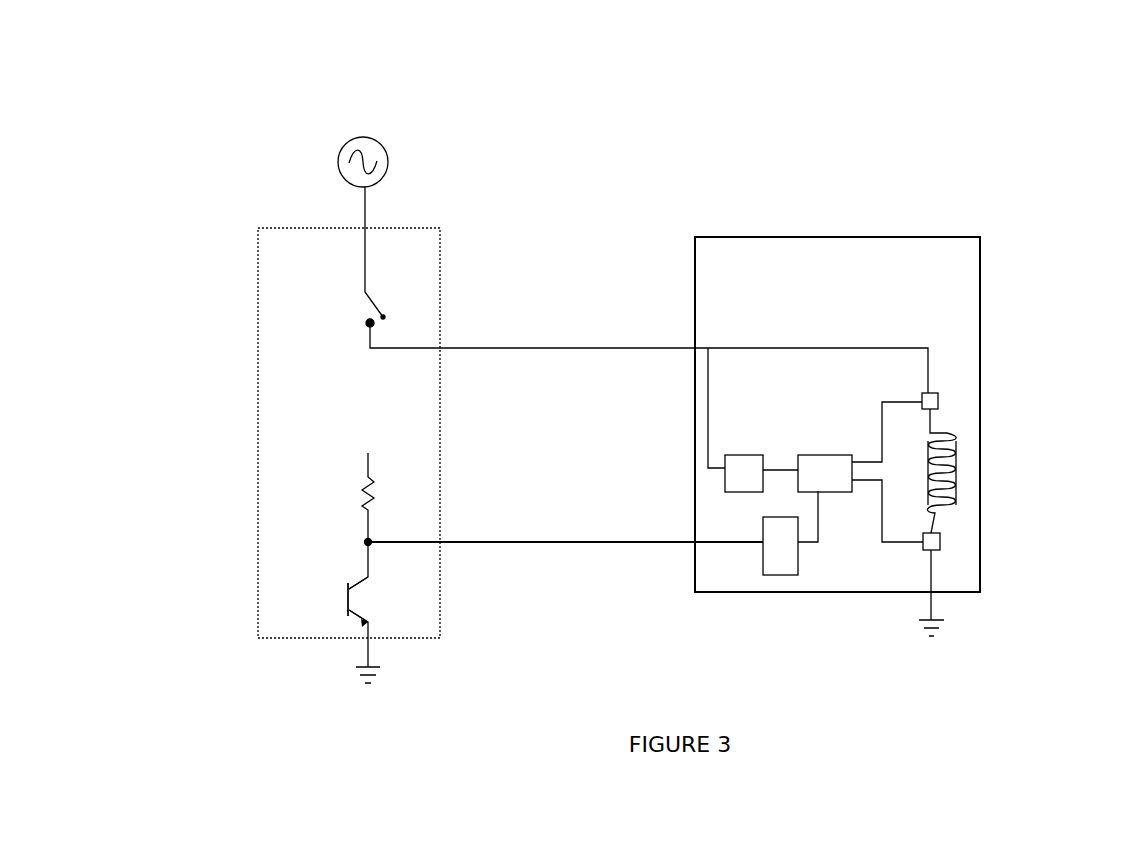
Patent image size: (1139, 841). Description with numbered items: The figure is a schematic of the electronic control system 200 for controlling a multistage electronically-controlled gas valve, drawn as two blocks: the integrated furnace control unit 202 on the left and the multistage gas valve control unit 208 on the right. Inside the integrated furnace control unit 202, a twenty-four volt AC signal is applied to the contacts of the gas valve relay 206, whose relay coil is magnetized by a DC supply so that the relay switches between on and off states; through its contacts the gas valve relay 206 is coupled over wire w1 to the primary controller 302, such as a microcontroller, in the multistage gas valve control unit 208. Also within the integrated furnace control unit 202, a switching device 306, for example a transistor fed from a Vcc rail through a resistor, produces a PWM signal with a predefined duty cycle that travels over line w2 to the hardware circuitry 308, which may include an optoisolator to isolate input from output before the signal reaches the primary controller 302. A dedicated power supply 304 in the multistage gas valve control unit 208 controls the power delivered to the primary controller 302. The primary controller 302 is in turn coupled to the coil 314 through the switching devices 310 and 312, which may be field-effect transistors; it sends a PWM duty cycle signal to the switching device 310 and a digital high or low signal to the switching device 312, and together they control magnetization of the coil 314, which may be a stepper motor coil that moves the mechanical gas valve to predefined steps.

The electronic control system 200 is at (977, 124).
The integrated furnace control unit 202 is at (593, 392).
The gas valve relay 206 is at (383, 318).
The multistage gas valve control unit 208 is at (837, 436).
The primary controller 302 is at (800, 455).
The dedicated power supply 304 is at (725, 492).
The switching device 306 is at (347, 585).
The hardware circuitry 308 is at (770, 575).
The switching device 310 is at (935, 393).
The switching device 312 is at (940, 550).
The coil 314 is at (957, 457).